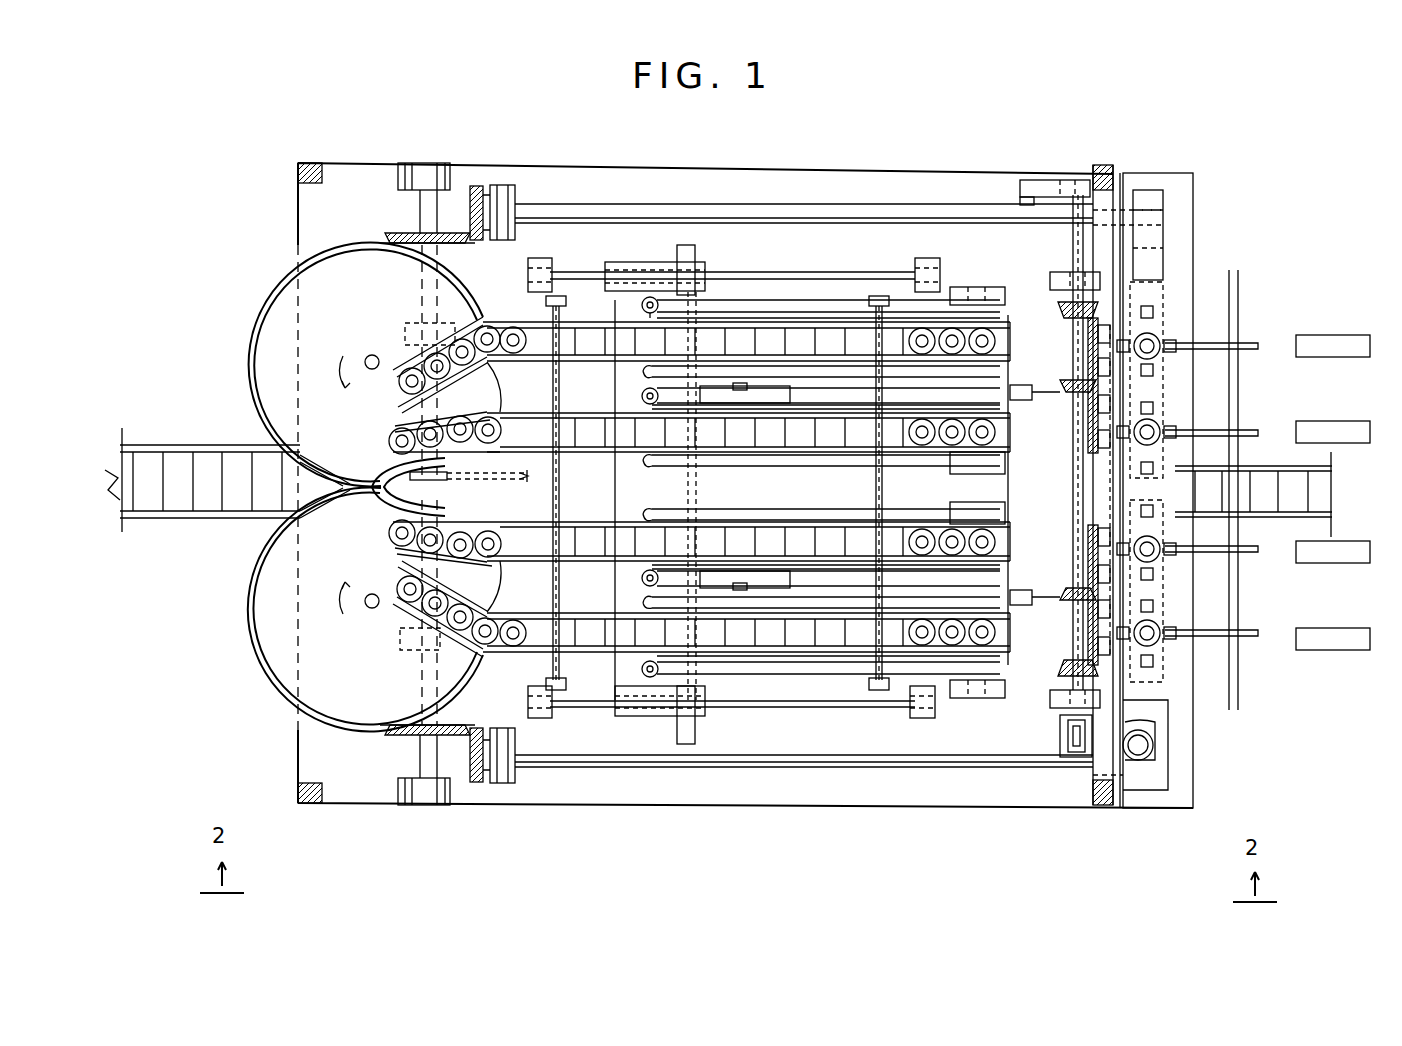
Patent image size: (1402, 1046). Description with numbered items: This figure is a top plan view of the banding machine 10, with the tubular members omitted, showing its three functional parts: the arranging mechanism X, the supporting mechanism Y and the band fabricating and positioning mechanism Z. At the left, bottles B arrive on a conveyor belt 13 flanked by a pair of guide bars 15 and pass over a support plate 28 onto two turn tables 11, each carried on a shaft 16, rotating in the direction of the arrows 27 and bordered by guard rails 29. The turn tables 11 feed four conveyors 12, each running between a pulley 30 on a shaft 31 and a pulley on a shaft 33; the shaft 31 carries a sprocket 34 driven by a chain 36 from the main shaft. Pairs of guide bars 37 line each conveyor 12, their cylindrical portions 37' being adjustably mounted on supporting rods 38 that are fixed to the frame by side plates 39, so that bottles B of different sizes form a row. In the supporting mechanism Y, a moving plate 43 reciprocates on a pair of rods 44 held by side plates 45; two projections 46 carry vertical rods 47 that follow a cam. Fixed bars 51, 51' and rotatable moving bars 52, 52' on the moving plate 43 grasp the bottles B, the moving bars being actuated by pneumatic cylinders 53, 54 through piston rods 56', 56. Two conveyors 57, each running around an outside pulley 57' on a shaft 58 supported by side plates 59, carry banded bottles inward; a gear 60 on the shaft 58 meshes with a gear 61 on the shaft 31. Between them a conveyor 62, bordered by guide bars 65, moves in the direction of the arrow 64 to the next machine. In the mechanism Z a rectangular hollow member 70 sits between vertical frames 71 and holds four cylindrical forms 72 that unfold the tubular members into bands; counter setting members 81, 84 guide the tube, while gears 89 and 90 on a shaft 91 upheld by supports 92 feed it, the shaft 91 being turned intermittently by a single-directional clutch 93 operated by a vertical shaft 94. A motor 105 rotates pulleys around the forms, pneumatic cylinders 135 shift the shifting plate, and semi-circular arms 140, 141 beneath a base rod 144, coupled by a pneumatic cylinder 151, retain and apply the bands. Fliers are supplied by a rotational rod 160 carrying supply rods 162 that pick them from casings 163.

The banding machine 10 is at (961, 155).
The turn tables 11 is at (285, 308).
The conveyors 12 is at (520, 340).
The conveyor belt 13 is at (170, 515).
The guide bars 15 is at (200, 445).
The shaft 16 is at (368, 358).
The arrows 27 is at (340, 385).
The support plate 28 is at (350, 488).
The guard rails 29 is at (248, 345).
The pulley 30 is at (405, 323).
The shaft 31 is at (420, 750).
The shaft 33 is at (1005, 385).
The sprocket 34 is at (460, 488).
The chain 36 is at (484, 480).
The guide bars 37 is at (692, 477).
The cylindrical portions 37' is at (753, 488).
The supporting rods 38 is at (560, 383).
The side plates 39 is at (566, 301).
The moving plate 43 is at (690, 490).
The rods 44 is at (590, 272).
The side plates 45 is at (538, 262).
The projections 46 is at (750, 385).
The vertical rods 47 is at (768, 360).
The fixed bar 51 is at (821, 438).
The fixed bar 51' is at (821, 531).
The moving bars 52 is at (821, 347).
The moving bars 52' is at (821, 629).
The pneumatic cylinder 53 is at (670, 262).
The pneumatic cylinder 54 is at (696, 740).
The piston rod 56 is at (821, 674).
The piston rod 56' is at (821, 302).
The conveyors 57 is at (1181, 490).
The outside pulley 57' is at (1183, 490).
The shaft 58 is at (852, 210).
The side plates 59 is at (515, 192).
The gear 60 is at (480, 185).
The gear 61 is at (390, 235).
The conveyor 62 is at (1332, 517).
The arrow 64 is at (1324, 496).
The guide bars 65 is at (1300, 467).
The rectangular hollow member 70 is at (1163, 668).
The vertical frames 71 is at (1105, 185).
The cylindrical forms 72 is at (1160, 340).
The counter setting members 81 is at (1160, 356).
The counter setting members 84 is at (1155, 312).
The gear 89 is at (1082, 338).
The gear 90 is at (1066, 310).
The shaft 91 is at (1073, 630).
The supports 92 is at (1055, 283).
The single-directional clutch 93 is at (1045, 185).
The vertical shaft 94 is at (1020, 200).
The motor 105 is at (1155, 748).
The pneumatic cylinders 135 is at (1030, 498).
The semi-circular arms 140 is at (1088, 562).
The semi-circular arms 141 is at (1088, 538).
The base rod 144 is at (1085, 250).
The pneumatic cylinder 151 is at (1068, 738).
The rotational rod 160 is at (1240, 325).
The supply rods 162 is at (1258, 432).
The casings 163 is at (1345, 362).
The arranging mechanism X is at (237, 298).
The supporting mechanism Y is at (722, 268).
The band fabricating and positioning mechanism Z is at (1213, 272).
The bottles B is at (770, 548).